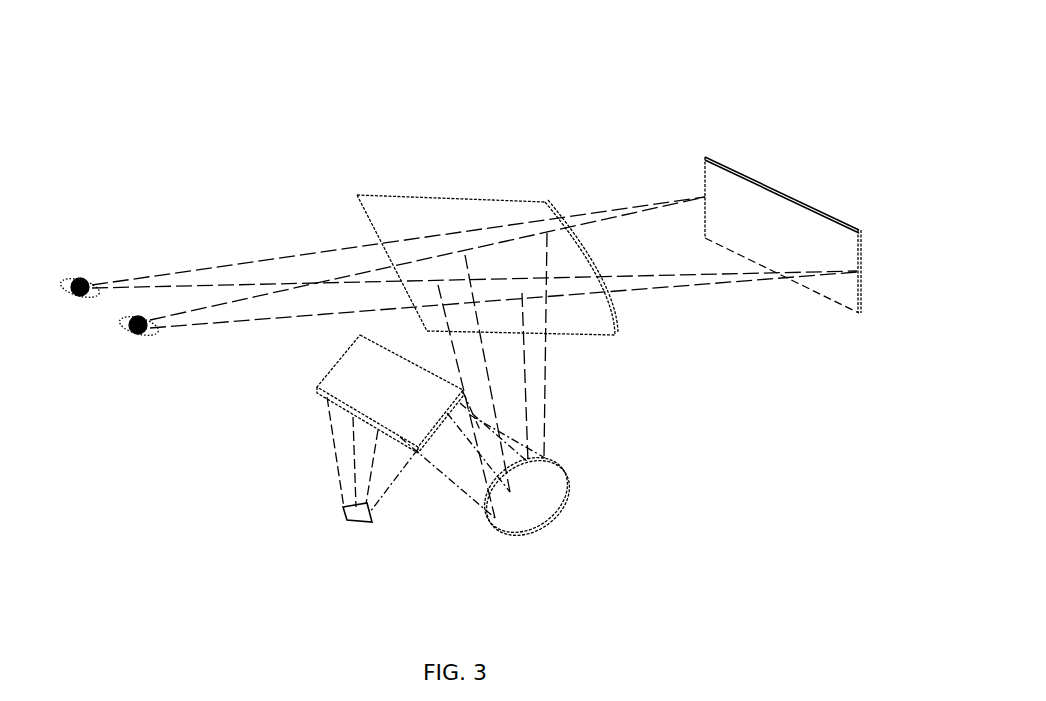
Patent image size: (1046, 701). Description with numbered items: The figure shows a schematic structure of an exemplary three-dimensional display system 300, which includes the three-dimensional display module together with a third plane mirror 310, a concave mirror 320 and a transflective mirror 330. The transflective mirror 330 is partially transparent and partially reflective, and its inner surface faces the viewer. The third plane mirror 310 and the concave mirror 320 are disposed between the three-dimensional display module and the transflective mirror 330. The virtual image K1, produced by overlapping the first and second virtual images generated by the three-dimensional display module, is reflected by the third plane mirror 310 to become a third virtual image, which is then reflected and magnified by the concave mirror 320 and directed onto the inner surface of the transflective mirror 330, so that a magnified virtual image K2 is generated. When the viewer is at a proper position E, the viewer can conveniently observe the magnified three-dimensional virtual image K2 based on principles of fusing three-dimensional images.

The 3D display system 300 is at (693, 25).
The third plane mirror 310 is at (356, 392).
The concave mirror 320 is at (584, 526).
The transflective mirror 330 is at (476, 202).
The virtual image K1 is at (296, 557).
The magnified virtual image K2 is at (744, 192).
The position E is at (72, 298).